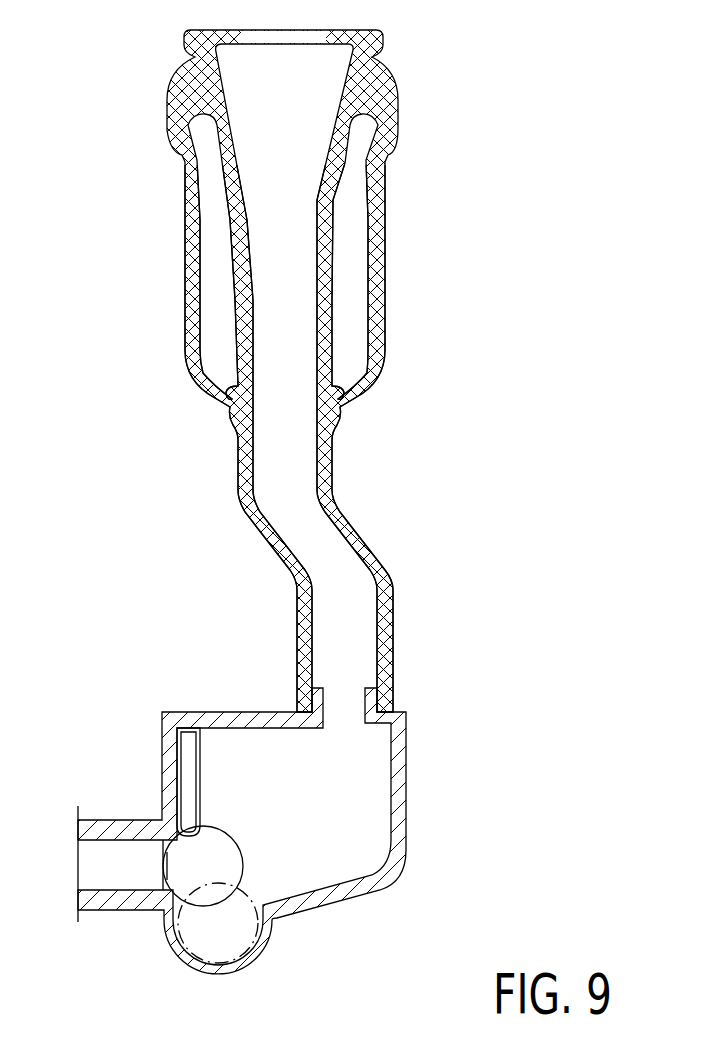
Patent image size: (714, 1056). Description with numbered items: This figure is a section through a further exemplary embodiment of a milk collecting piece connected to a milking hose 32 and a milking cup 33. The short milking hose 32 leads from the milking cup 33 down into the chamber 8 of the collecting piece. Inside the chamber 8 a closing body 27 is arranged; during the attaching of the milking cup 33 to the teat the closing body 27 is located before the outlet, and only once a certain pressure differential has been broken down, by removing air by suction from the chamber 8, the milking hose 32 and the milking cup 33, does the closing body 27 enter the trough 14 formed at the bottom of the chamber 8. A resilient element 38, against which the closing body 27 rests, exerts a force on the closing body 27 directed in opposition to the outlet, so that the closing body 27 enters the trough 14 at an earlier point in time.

The milking cup 33 is at (398, 102).
The milking hose 32 is at (357, 532).
The chamber 8 is at (320, 804).
The trough 14 is at (253, 960).
The resilient element 38 is at (193, 765).
The closing body 27 is at (208, 866).